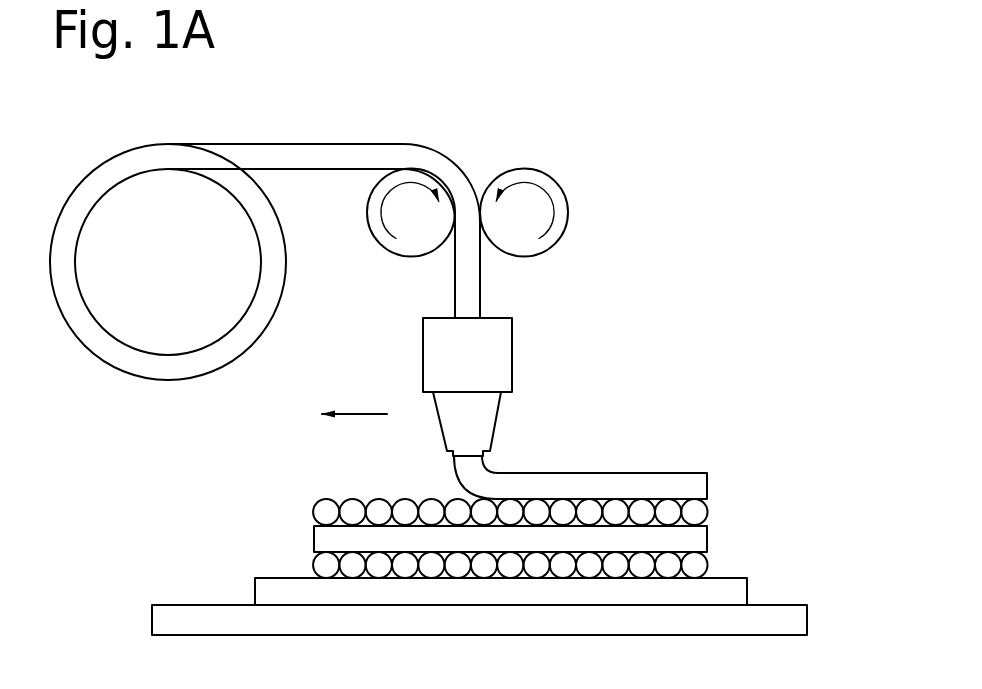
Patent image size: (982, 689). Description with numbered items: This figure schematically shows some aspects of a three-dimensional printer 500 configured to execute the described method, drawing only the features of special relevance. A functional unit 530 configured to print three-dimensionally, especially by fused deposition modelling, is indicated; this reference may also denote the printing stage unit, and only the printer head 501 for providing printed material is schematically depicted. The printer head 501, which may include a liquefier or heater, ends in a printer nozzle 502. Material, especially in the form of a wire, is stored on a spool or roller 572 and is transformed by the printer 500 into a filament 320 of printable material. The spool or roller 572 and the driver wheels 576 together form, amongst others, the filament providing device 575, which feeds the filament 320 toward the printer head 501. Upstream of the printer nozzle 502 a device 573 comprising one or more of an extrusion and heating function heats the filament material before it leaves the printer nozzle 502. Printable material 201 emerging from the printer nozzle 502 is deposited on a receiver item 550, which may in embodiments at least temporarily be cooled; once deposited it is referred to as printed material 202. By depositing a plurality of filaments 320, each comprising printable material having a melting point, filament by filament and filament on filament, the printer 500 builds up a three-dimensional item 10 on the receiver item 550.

The 3D printer 500 is at (725, 318).
The spool or roller 572 is at (128, 143).
The driver wheels 576 is at (469, 148).
The filament providing device 575 is at (578, 170).
The extrusion and/or heating device 573 is at (557, 283).
The printer head 501 is at (493, 362).
The printer nozzle 502 is at (447, 457).
The functional unit configured to 3D print 530 is at (177, 441).
The 3D item 10 is at (765, 510).
The printable material 201 is at (474, 463).
The 3D printed material 202 is at (670, 487).
The filament 320 is at (680, 535).
The receiver item 550 is at (250, 590).